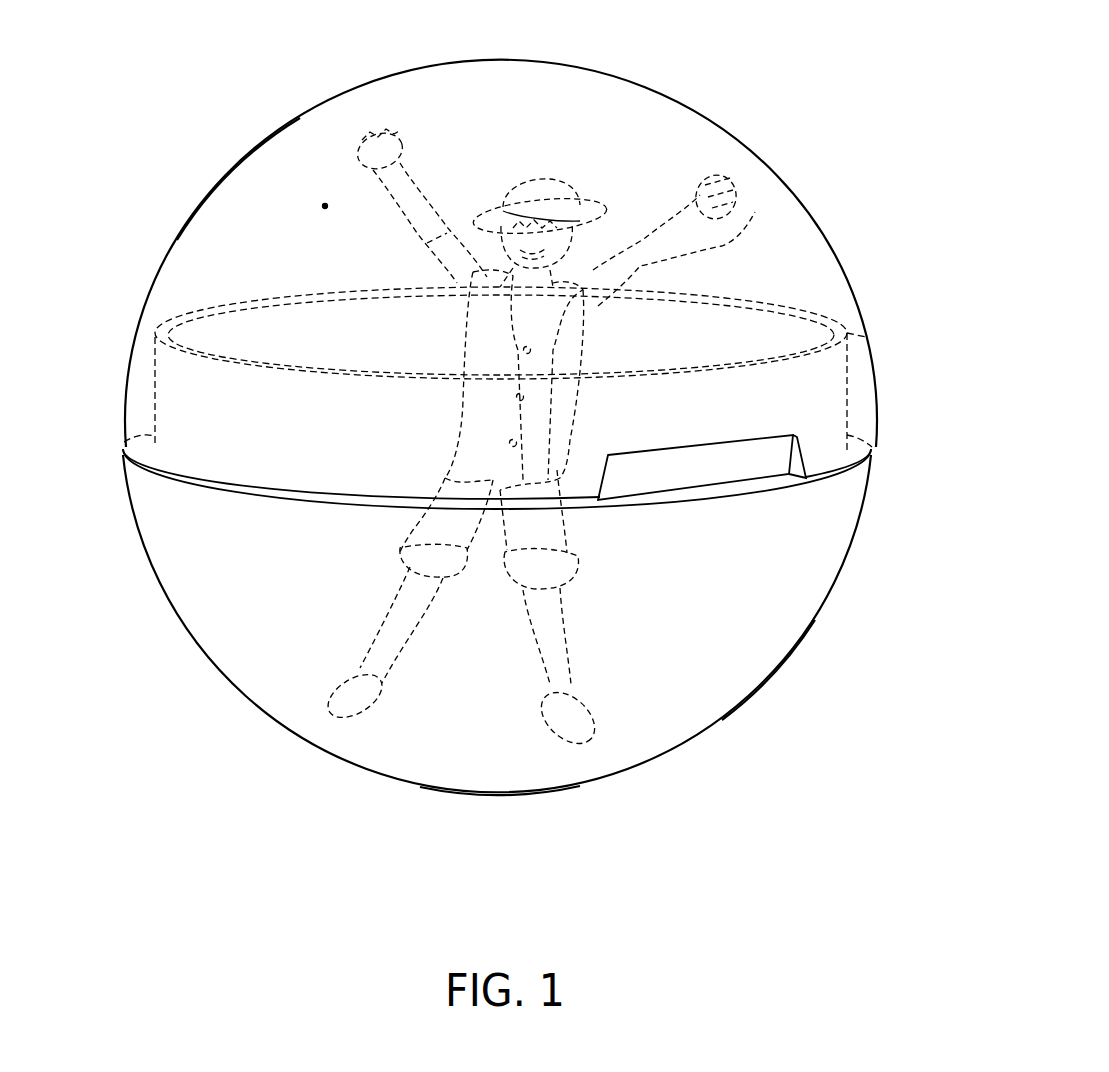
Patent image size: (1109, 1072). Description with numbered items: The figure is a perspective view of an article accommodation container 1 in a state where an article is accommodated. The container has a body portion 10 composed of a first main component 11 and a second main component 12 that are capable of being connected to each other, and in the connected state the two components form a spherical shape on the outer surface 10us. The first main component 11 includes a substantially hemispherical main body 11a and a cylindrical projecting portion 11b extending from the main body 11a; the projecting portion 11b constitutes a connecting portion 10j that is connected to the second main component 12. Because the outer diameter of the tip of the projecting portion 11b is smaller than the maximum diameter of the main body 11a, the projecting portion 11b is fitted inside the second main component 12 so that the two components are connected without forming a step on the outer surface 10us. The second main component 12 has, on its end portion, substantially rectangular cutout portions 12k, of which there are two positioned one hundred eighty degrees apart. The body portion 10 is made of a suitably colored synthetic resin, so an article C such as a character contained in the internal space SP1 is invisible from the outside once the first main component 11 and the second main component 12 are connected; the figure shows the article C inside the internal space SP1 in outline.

The article accommodation container 1 is at (476, 441).
The body portion 10 is at (526, 390).
The outer surface 10us is at (243, 215).
The connecting portion 10j is at (880, 330).
The first main component 11 is at (475, 583).
The main body 11a is at (560, 794).
The projecting portion 11b is at (870, 330).
The second main component 12 is at (447, 418).
The cutout portion 12k is at (665, 454).
The internal space SP1 is at (325, 205).
The article C is at (742, 232).